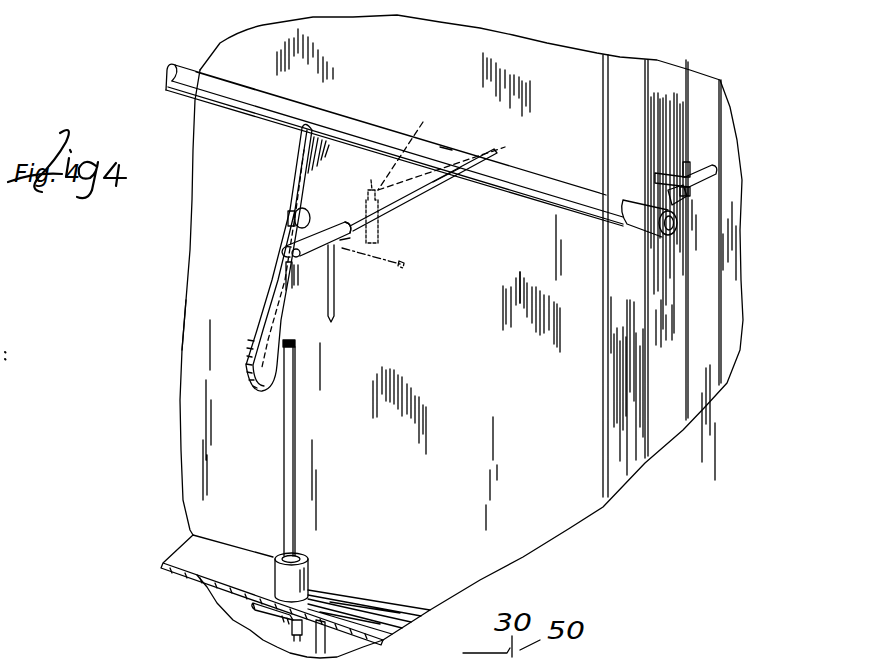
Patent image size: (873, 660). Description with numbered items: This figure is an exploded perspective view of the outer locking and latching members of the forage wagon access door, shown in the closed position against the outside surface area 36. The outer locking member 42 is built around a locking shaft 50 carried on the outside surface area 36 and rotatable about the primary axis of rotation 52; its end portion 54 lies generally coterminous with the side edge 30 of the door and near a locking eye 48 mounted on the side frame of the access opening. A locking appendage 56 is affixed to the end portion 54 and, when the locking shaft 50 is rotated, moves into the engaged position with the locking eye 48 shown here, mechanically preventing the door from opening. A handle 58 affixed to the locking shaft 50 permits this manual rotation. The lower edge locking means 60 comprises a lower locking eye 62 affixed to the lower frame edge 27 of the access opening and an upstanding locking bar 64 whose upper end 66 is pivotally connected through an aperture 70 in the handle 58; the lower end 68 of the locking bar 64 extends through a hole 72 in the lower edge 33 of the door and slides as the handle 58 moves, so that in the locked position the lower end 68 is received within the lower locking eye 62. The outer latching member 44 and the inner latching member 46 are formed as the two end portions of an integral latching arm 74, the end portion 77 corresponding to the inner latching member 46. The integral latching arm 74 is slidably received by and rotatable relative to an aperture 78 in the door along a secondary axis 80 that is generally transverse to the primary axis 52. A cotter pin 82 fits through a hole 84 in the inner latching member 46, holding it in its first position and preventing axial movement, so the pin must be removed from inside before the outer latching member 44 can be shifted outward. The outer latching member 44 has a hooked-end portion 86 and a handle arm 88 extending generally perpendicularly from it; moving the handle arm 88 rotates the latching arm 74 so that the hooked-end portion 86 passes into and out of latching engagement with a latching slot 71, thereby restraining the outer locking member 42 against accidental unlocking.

The lower frame edge 27 is at (193, 580).
The side edge 30 is at (627, 287).
The lower edge 33 is at (374, 596).
The outside surface area 36 is at (560, 387).
The outer locking member 42 is at (362, 70).
The outer latching member 44 is at (210, 260).
The inner latching member 46 is at (420, 211).
The locking eye 48 is at (712, 170).
The locking shaft 50 is at (445, 148).
The primary axis of rotation 52 is at (80, 36).
The end portion 54 is at (677, 225).
The locking appendage 56 is at (690, 192).
The handle 58 is at (302, 146).
The lower edge locking means 60 is at (289, 570).
The lower locking eye 62 is at (250, 617).
The locking bar 64 is at (284, 430).
The upper end 66 is at (294, 208).
The lower end 68 is at (287, 635).
The aperture 70 is at (259, 195).
The latching slot 71 is at (282, 288).
The hole 72 is at (313, 573).
The integral latching arm 74 is at (353, 256).
The end portion 77 is at (440, 186).
The aperture 78 is at (350, 222).
The secondary axis 80 is at (505, 149).
The cotter pin 82 is at (408, 142).
The hole 84 is at (378, 222).
The hooked-end portion 86 is at (288, 259).
The handle arm 88 is at (333, 320).